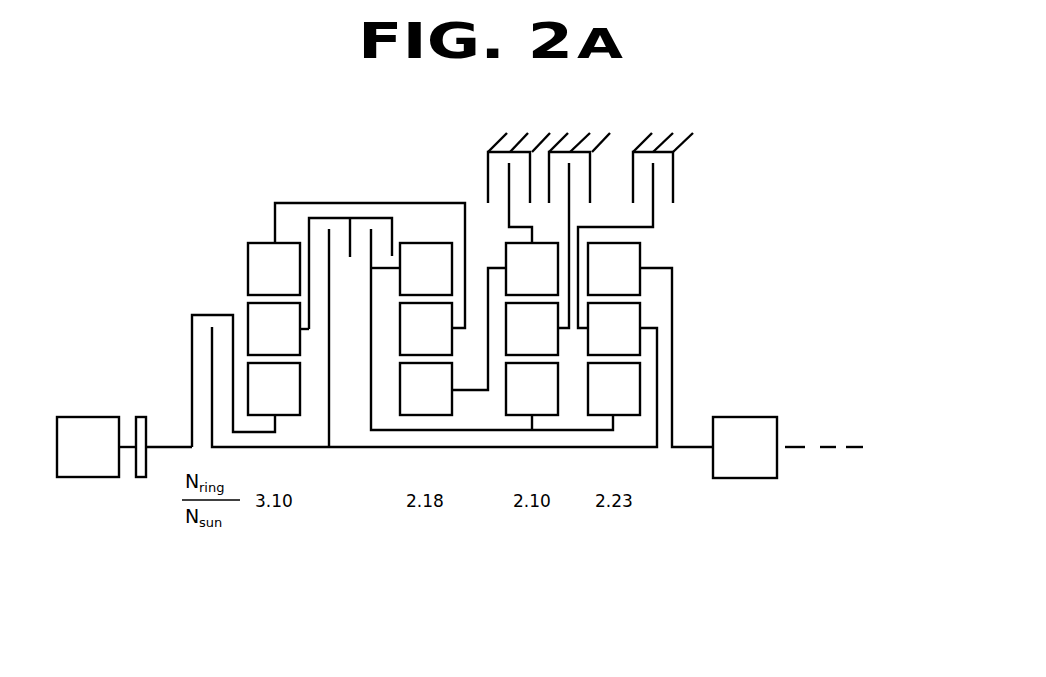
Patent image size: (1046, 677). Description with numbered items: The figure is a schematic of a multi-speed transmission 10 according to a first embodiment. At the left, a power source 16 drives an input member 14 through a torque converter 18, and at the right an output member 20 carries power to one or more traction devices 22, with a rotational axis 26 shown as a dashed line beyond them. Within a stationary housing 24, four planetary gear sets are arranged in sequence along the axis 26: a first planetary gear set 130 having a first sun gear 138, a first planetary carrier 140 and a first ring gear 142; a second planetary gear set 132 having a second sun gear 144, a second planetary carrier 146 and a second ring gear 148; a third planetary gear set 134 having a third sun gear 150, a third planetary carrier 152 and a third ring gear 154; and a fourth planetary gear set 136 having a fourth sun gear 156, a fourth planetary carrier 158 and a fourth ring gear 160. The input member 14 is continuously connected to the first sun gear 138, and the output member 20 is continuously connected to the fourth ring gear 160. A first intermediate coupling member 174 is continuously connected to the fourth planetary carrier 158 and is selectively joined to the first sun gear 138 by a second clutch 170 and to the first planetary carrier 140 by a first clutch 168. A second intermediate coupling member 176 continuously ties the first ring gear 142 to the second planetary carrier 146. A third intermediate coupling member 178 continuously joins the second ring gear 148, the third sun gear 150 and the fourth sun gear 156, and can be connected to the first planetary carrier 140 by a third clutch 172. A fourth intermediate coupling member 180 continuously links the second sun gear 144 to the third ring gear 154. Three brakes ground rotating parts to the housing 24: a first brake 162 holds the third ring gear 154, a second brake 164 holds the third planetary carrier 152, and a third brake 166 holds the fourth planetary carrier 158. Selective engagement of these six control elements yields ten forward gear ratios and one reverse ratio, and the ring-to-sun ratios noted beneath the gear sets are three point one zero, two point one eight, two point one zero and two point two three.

The multi-speed transmission 10 is at (225, 151).
The input member 14 is at (180, 446).
The power source 16 is at (77, 463).
The torque converter 18 is at (136, 423).
The output member 20 is at (693, 444).
The traction devices 22 is at (733, 463).
The stationary housing 24 is at (500, 138).
The rotational axis 26 is at (808, 445).
The first planetary gear set 130 is at (246, 307).
The second planetary gear set 132 is at (429, 309).
The third planetary gear set 134 is at (514, 309).
The fourth planetary gear set 136 is at (657, 320).
The first sun gear 138 is at (258, 402).
The first planetary carrier 140 is at (258, 342).
The first ring gear 142 is at (258, 282).
The second sun gear 144 is at (410, 402).
The second planetary carrier 146 is at (410, 342).
The second ring gear 148 is at (410, 282).
The third sun gear 150 is at (516, 402).
The third planetary carrier 152 is at (516, 342).
The third ring gear 154 is at (516, 282).
The fourth sun gear 156 is at (598, 402).
The fourth planetary carrier 158 is at (598, 342).
The fourth ring gear 160 is at (598, 282).
The first brake 162 is at (487, 162).
The second brake 164 is at (590, 168).
The third brake 166 is at (673, 172).
The first clutch 168 is at (312, 217).
The second clutch 170 is at (208, 314).
The third clutch 172 is at (367, 217).
The first intermediate coupling member 174 is at (320, 449).
The second intermediate coupling member 176 is at (387, 203).
The third intermediate coupling member 178 is at (370, 425).
The fourth intermediate coupling member 180 is at (460, 393).